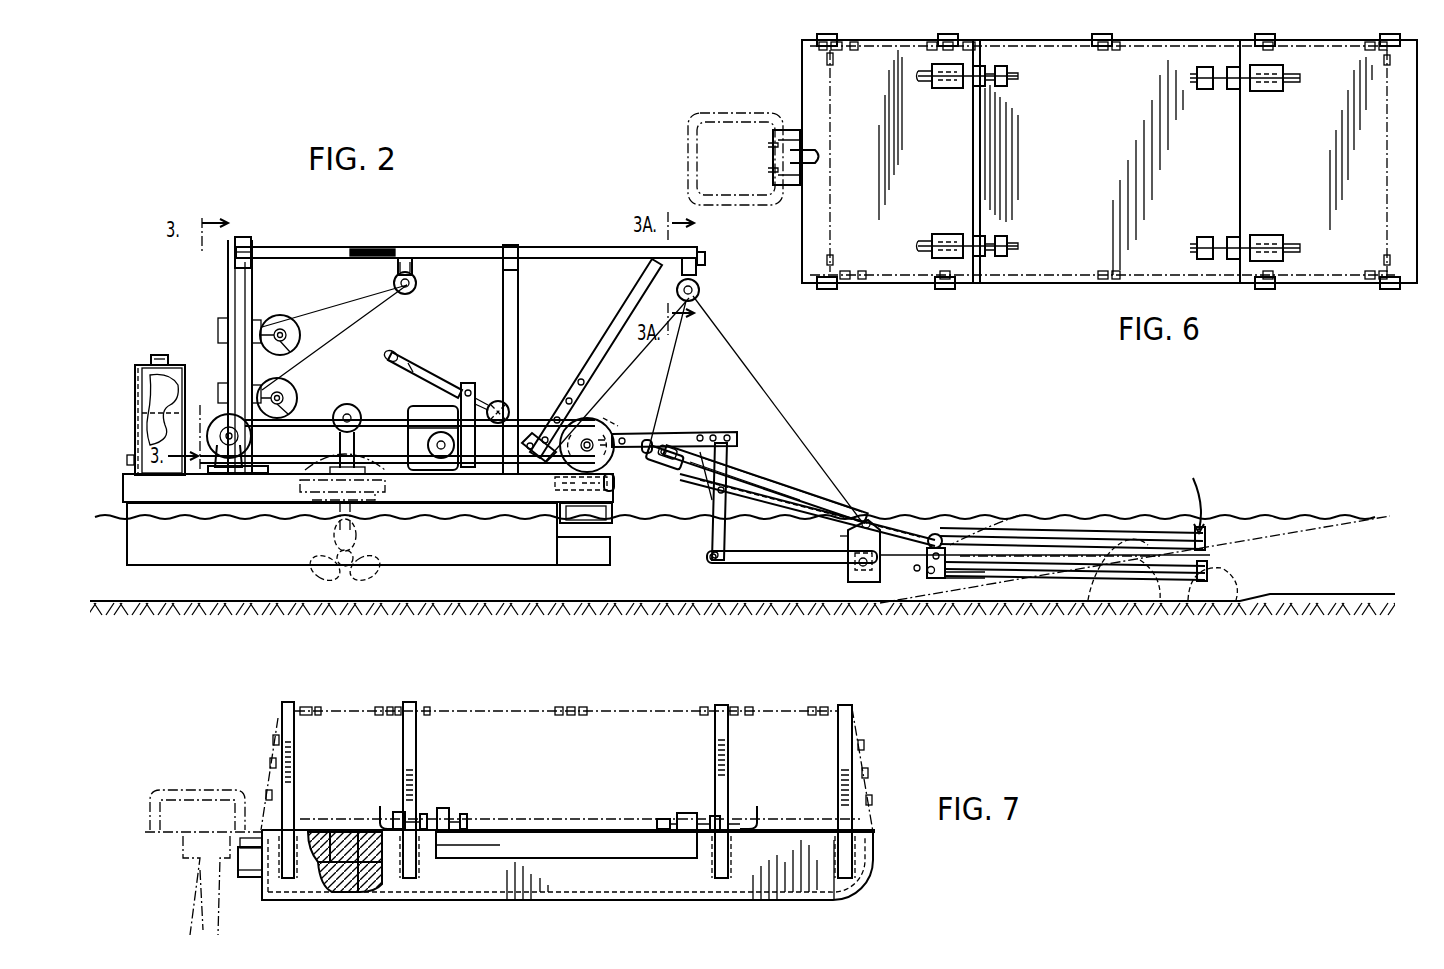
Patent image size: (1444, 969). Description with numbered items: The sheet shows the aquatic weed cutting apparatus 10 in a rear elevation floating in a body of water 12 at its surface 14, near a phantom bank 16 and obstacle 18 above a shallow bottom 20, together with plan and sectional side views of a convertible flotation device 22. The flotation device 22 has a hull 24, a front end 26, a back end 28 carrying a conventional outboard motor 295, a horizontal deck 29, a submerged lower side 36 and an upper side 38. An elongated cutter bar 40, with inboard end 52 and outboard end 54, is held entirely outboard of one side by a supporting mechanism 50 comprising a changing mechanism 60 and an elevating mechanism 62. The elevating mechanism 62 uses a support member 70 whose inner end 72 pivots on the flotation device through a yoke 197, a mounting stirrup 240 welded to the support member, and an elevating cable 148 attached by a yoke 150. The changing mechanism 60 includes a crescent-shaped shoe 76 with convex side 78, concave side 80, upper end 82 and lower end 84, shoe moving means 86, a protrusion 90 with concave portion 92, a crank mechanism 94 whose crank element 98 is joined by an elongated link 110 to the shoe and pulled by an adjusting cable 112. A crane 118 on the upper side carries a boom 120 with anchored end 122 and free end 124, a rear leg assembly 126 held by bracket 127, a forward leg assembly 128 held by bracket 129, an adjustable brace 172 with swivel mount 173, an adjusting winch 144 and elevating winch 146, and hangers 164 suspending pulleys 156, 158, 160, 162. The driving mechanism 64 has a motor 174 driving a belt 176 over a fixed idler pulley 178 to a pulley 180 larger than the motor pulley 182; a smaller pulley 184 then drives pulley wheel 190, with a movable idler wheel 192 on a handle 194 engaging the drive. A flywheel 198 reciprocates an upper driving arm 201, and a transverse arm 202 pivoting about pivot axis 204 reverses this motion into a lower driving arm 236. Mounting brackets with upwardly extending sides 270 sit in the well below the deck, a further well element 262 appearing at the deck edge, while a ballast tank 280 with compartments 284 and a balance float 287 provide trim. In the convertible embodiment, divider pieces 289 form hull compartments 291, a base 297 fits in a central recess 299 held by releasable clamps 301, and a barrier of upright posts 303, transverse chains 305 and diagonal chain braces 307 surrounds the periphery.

In FIG. 2, the aquatic weed cutting apparatus 10 is at (204, 319).
In FIG. 2, the body of water 12 is at (1300, 522).
In FIG. 2, the surface 14 is at (1238, 520).
In FIG. 2, the bank 16 is at (1350, 545).
In FIG. 2, the obstacle 18 is at (1090, 630).
In FIG. 2, the shallow bottom 20 is at (726, 604).
In FIG. 2, the flotation device 22 is at (354, 512).
In FIG. 6, the flotation device 22 is at (1094, 183).
In FIG. 7, the flotation device 22 is at (577, 881).
In FIG. 2, the hull 24 is at (127, 505).
In FIG. 7, the hull 24 is at (654, 890).
In FIG. 6, the front end 26 is at (1417, 272).
In FIG. 7, the front end 26 is at (875, 845).
In FIG. 2, the back end 28 is at (271, 546).
In FIG. 6, the back end 28 is at (800, 78).
In FIG. 7, the back end 28 is at (262, 895).
In FIG. 2, the horizontal deck 29 is at (300, 462).
In FIG. 6, the horizontal deck 29 is at (1351, 265).
In FIG. 7, the horizontal deck 29 is at (792, 830).
In FIG. 2, the lower side 36 is at (483, 565).
In FIG. 2, the upper side 38 is at (134, 425).
In FIG. 2, the cutter bar 40 is at (1070, 565).
In FIG. 2, the supporting mechanism 50 is at (777, 476).
In FIG. 2, the inboard end 52 is at (872, 583).
In FIG. 2, the outboard end 54 is at (1210, 560).
In FIG. 2, the changing mechanism 60 is at (708, 430).
In FIG. 2, the elevating mechanism 62 is at (672, 487).
In FIG. 2, the driving mechanism 64 is at (650, 432).
In FIG. 2, the support member 70 is at (790, 478).
In FIG. 2, the inner end 72 is at (619, 427).
In FIG. 2, the crescent-shaped shoe 76 is at (990, 512).
In FIG. 2, the convex side 78 is at (942, 540).
In FIG. 2, the concave side 80 is at (955, 580).
In FIG. 2, the upper end 82 is at (948, 545).
In FIG. 2, the lower end 84 is at (932, 574).
In FIG. 2, the shoe moving means 86 is at (933, 533).
In FIG. 2, the protrusion 90 is at (900, 578).
In FIG. 2, the concave portion 92 is at (915, 572).
In FIG. 2, the crank mechanism 94 is at (664, 448).
In FIG. 2, the crank element 98 is at (632, 466).
In FIG. 2, the elongated link 110 is at (812, 488).
In FIG. 2, the adjusting cable 112 is at (358, 298).
In FIG. 2, the crane 118 is at (420, 323).
In FIG. 2, the boom 120 is at (460, 246).
In FIG. 2, the anchored end 122 is at (252, 242).
In FIG. 2, the free end 124 is at (706, 256).
In FIG. 2, the rear leg assembly 126 is at (254, 287).
In FIG. 2, the bracket 127 is at (243, 236).
In FIG. 2, the forward leg assembly 128 is at (502, 306).
In FIG. 2, the bracket 129 is at (512, 245).
In FIG. 2, the adjusting winch 144 is at (300, 335).
In FIG. 2, the elevating winch 146 is at (297, 395).
In FIG. 2, the elevating cable 148 is at (760, 370).
In FIG. 2, the yoke 150 is at (852, 525).
In FIG. 2, the pulley 156 is at (412, 292).
In FIG. 2, the pulley 158 is at (700, 288).
In FIG. 2, the pulley 160 is at (398, 290).
In FIG. 2, the pulley 162 is at (642, 292).
In FIG. 2, the hanger 164 is at (403, 257).
In FIG. 2, the adjustable brace 172 is at (608, 337).
In FIG. 2, the swivel mount 173 is at (535, 433).
In FIG. 2, the motor 174 is at (410, 406).
In FIG. 2, the belt 176 is at (385, 432).
In FIG. 2, the fixed idler pulley 178 is at (352, 398).
In FIG. 2, the pulley 180 is at (380, 423).
In FIG. 2, the pulley 182 is at (470, 390).
In FIG. 2, the pulley 184 is at (210, 470).
In FIG. 2, the pulley wheel 190 is at (558, 472).
In FIG. 2, the movable idler wheel 192 is at (505, 400).
In FIG. 2, the handle 194 is at (440, 380).
In FIG. 2, the yoke 197 is at (596, 424).
In FIG. 2, the flywheel 198 is at (608, 412).
In FIG. 2, the upper driving arm 201 is at (665, 432).
In FIG. 2, the transverse arm 202 is at (706, 505).
In FIG. 2, the pivot axis 204 is at (742, 478).
In FIG. 2, the lower driving arm 236 is at (770, 564).
In FIG. 2, the mounting stirrup 240 is at (846, 550).
In FIG. 2, the cylinder mount 262 is at (558, 515).
In FIG. 2, the upwardly extending sides 270 is at (605, 523).
In FIG. 2, the ballast tank 280 is at (141, 384).
In FIG. 2, the compartments 284 is at (173, 356).
In FIG. 2, the balance float 287 is at (583, 566).
In FIG. 7, the divider pieces 289 is at (375, 892).
In FIG. 7, the compartments 291 is at (345, 830).
In FIG. 2, the outboard motor 295 is at (300, 487).
In FIG. 6, the outboard motor 295 is at (690, 150).
In FIG. 7, the outboard motor 295 is at (210, 790).
In FIG. 6, the base 297 is at (1108, 193).
In FIG. 7, the base 297 is at (585, 830).
In FIG. 6, the central recess 299 is at (995, 205).
In FIG. 7, the central recess 299 is at (445, 858).
In FIG. 6, the releasable clamps 301 is at (945, 88).
In FIG. 7, the releasable clamps 301 is at (462, 812).
In FIG. 7, the upright posts 303 is at (418, 740).
In FIG. 6, the transverse chains 305 is at (1122, 50).
In FIG. 7, the transverse chains 305 is at (425, 710).
In FIG. 7, the diagonal chain braces 307 is at (858, 760).